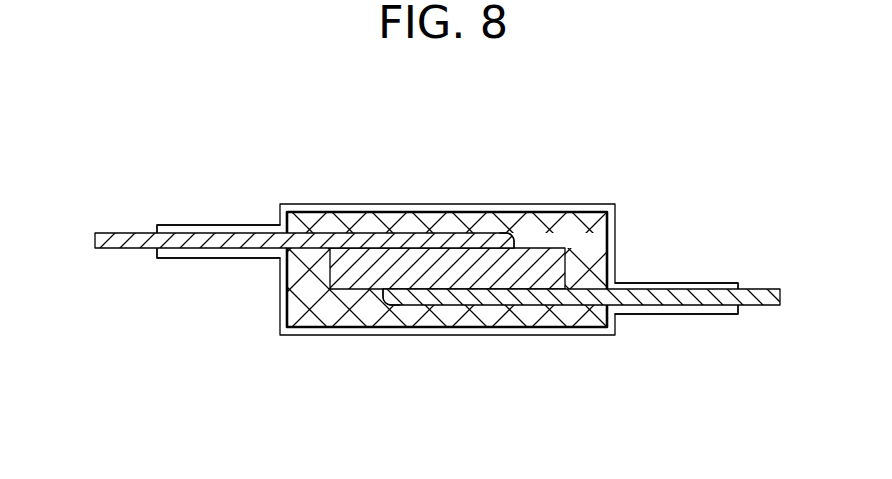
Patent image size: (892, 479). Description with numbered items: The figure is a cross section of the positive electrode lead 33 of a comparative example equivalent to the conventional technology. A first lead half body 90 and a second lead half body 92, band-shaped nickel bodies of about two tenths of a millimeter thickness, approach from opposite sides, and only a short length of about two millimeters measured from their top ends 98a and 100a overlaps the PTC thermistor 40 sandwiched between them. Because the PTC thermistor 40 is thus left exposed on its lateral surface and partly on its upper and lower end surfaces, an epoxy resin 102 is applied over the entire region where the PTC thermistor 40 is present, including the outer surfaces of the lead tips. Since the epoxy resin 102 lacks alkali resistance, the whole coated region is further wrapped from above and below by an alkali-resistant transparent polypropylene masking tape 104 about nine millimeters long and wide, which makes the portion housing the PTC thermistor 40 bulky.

The positive electrode lead 33 is at (617, 178).
The PTC thermistor 40 is at (467, 262).
The first lead half body 90 is at (132, 233).
The second lead half body 92 is at (751, 308).
The top end of first lead half body 98a is at (514, 236).
The top end of second lead half body 100a is at (383, 296).
The epoxy resin 102 is at (396, 224).
The masking tape 104 is at (468, 204).